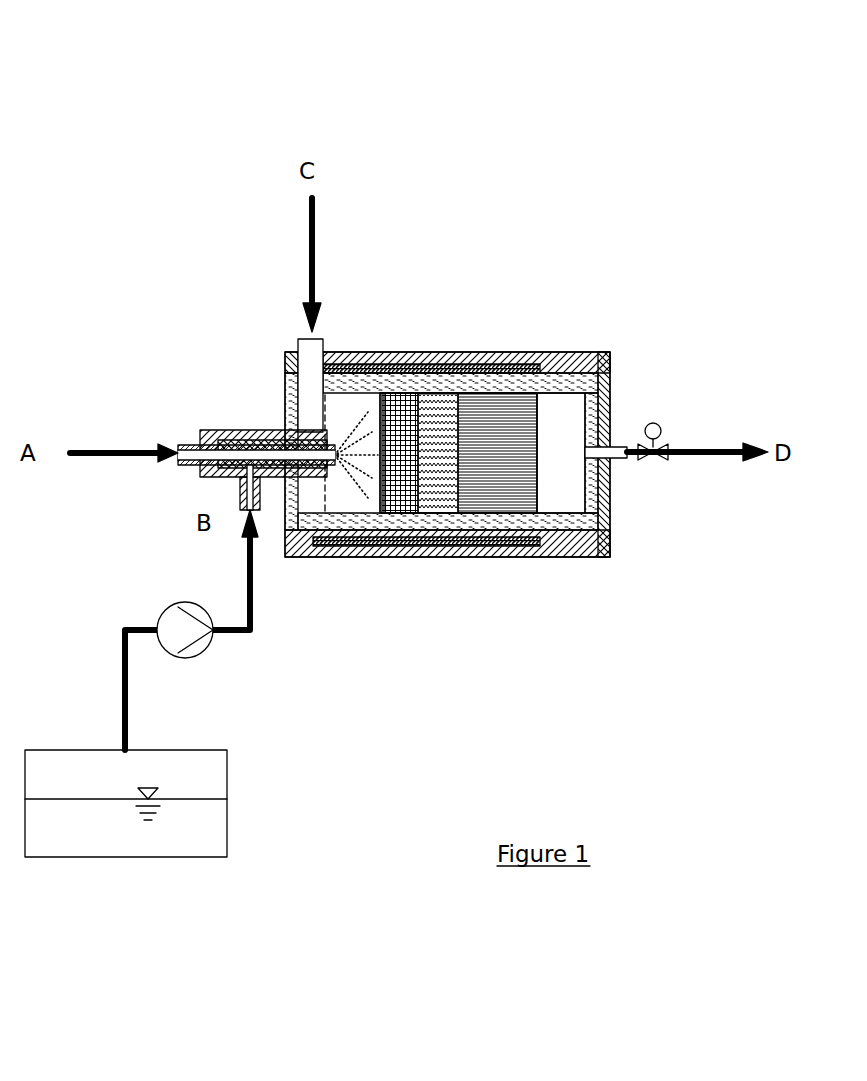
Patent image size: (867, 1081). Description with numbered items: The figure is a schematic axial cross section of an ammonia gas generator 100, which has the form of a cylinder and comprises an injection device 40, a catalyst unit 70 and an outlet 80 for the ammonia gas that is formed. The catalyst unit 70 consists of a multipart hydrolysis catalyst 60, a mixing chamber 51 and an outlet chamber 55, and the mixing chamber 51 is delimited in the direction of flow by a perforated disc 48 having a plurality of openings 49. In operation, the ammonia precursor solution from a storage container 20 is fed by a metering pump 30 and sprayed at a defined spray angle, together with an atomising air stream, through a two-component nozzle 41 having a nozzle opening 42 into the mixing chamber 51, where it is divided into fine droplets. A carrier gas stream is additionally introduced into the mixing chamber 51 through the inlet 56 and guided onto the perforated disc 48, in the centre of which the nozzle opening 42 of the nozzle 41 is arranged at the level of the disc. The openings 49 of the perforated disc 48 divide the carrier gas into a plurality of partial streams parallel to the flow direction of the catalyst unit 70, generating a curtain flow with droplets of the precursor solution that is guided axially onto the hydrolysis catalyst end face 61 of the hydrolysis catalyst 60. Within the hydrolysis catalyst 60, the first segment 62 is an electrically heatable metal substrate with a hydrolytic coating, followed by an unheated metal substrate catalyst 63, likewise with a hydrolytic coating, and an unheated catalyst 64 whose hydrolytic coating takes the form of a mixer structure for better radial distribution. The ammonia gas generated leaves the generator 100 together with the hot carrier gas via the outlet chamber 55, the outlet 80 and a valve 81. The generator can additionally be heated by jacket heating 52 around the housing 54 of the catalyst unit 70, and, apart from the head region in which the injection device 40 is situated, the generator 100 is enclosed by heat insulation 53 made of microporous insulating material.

The ammonia gas generator 100 is at (513, 186).
The storage container 20 is at (125, 858).
The metering pump 30 is at (185, 660).
The injection device 40 is at (278, 430).
The two-component nozzle 41 is at (262, 430).
The nozzle opening 42 is at (333, 420).
The perforated disc 48 is at (282, 430).
The openings 49 is at (324, 498).
The mixing chamber 51 is at (293, 351).
The jacket heating 52 is at (458, 352).
The heat insulation 53 is at (577, 352).
The housing 54 is at (612, 358).
The outlet chamber 55 is at (565, 434).
The inlet 56 is at (336, 426).
The hydrolysis catalyst 60 is at (624, 668).
The hydrolysis catalyst end face 61 is at (380, 452).
The first segment 62 is at (402, 458).
The unheated metal substrate catalyst 63 is at (432, 453).
The unheated catalyst 64 is at (503, 458).
The catalyst unit 70 is at (502, 352).
The outlet 80 is at (617, 495).
The valve 81 is at (653, 462).